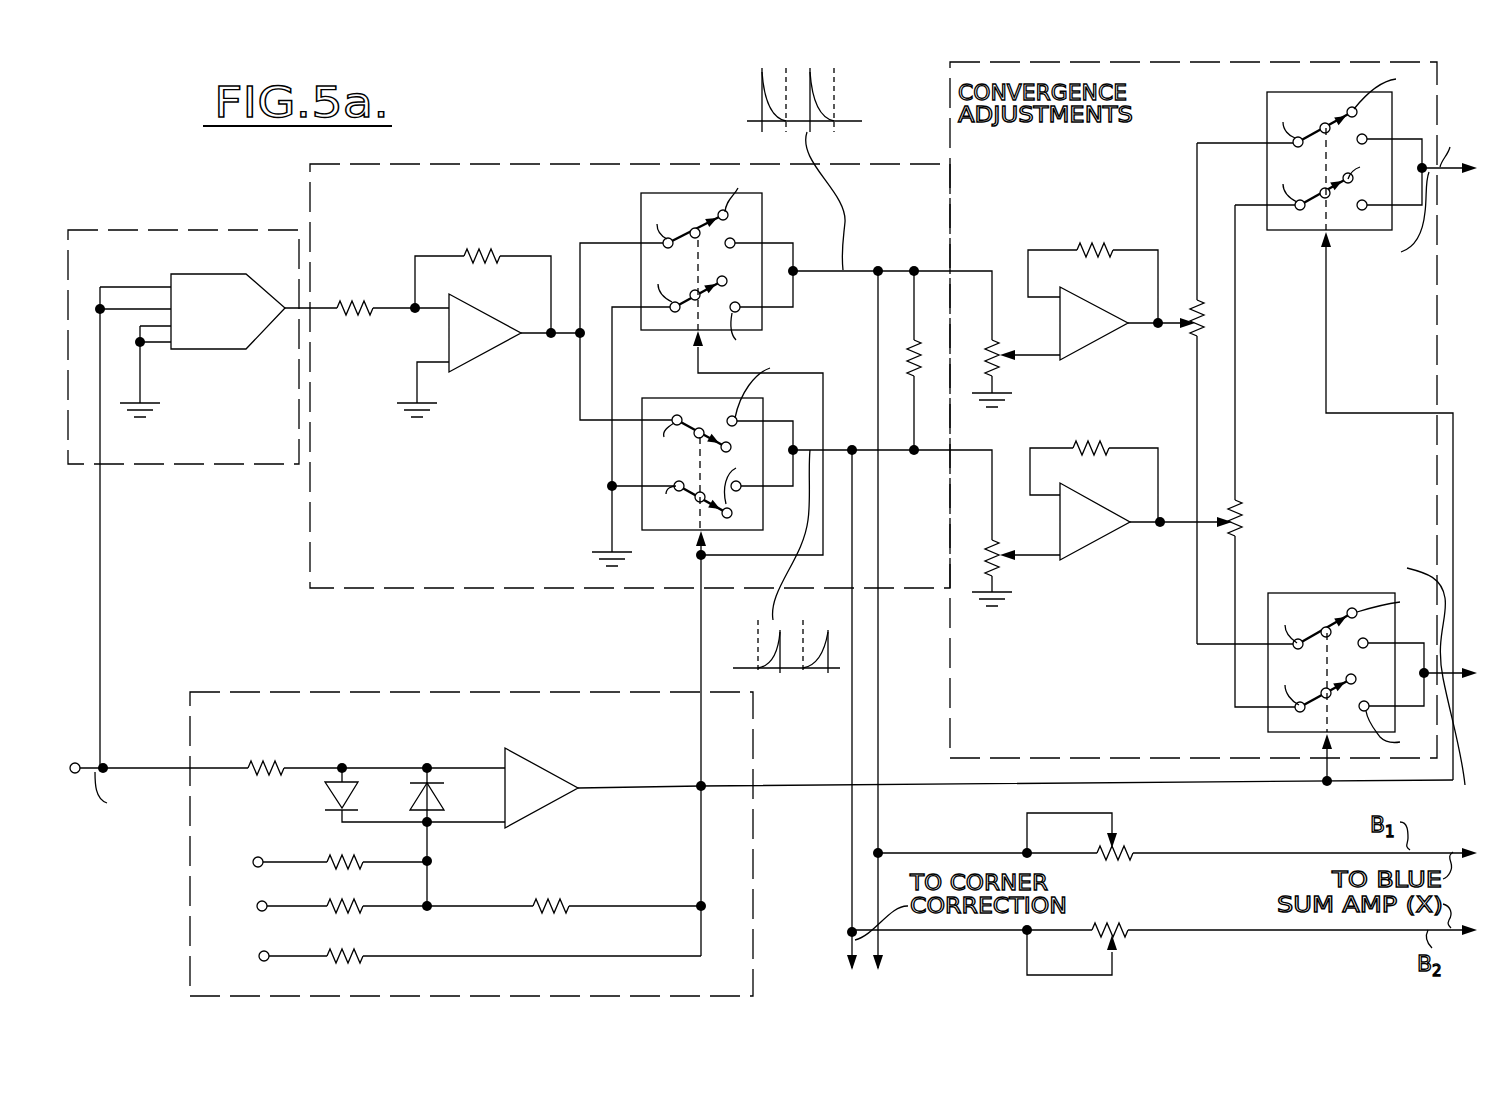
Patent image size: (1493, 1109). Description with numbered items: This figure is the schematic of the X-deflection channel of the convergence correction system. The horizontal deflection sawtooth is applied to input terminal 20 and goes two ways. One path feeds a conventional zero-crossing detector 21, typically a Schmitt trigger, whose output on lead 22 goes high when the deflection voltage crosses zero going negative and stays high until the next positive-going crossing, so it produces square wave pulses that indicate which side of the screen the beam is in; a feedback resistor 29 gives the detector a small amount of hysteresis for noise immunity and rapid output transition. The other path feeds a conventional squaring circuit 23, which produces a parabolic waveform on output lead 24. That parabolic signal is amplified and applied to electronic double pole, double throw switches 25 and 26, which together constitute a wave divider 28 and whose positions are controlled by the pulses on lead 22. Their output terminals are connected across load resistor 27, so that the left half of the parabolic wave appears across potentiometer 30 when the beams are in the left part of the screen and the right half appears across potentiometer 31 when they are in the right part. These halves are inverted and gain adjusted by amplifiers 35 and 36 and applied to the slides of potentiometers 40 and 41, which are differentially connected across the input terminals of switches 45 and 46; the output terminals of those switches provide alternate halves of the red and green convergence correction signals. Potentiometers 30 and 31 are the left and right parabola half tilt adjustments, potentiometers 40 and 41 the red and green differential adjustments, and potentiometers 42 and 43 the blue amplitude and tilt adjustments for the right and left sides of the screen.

The input terminal 20 is at (87, 767).
The zero-crossing detector 21 is at (232, 692).
The lead 22 is at (641, 786).
The squaring circuit 23 is at (217, 230).
The output lead 24 is at (435, 312).
The electronic double pole, double throw switch 25 is at (762, 225).
The electronic double pole, double throw switch 26 is at (672, 398).
The load resistor 27 is at (912, 345).
The wave divider 28 is at (531, 164).
The feedback resistor 29 is at (569, 903).
The potentiometer 30 is at (1000, 372).
The potentiometer 31 is at (1000, 572).
The amplifier 35 is at (1087, 348).
The amplifier 36 is at (1085, 552).
The potentiometer 40 is at (1188, 338).
The potentiometer 41 is at (1242, 502).
The potentiometer 42 is at (1131, 851).
The potentiometer 43 is at (1127, 928).
The switch 45 is at (1282, 232).
The switch 46 is at (1268, 727).